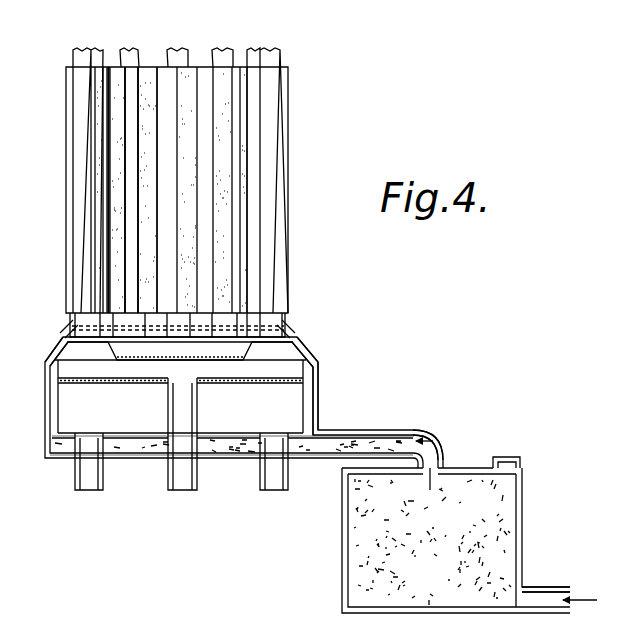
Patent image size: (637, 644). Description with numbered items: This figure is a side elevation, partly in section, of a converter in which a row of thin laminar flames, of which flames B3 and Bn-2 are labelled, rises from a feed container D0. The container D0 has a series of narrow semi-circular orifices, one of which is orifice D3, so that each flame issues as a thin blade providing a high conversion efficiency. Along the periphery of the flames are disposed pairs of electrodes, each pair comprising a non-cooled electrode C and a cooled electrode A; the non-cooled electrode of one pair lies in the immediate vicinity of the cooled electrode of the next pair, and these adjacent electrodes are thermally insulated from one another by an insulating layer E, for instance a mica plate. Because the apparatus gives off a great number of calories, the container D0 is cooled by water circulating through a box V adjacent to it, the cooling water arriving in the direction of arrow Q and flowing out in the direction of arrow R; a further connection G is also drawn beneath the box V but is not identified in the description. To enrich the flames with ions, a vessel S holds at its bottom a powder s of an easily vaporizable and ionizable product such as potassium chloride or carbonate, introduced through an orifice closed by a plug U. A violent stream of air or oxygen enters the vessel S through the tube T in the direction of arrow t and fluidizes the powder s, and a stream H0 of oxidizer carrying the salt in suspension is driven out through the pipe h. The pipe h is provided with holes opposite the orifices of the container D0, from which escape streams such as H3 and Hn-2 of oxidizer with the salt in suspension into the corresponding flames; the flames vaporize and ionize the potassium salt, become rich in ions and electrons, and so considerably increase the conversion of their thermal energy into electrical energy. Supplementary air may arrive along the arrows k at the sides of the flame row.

The thin flame B3 is at (84, 51).
The thin flame Bn-2 is at (270, 52).
The thermal insulating layer E is at (125, 138).
The non-cooled electrode C is at (150, 175).
The cooled electrode A is at (133, 202).
The supplementary air arrows k is at (68, 321).
The oxidizer stream H3 is at (58, 340).
The oxidizer stream Hn-2 is at (305, 338).
The orifice D3 is at (97, 345).
The feed container D0 is at (308, 368).
The cooling box V is at (222, 440).
The cooling water outlet arrow R is at (88, 478).
The inlet pipe G is at (182, 480).
The cooling water inlet arrow Q is at (275, 480).
The pipe h is at (413, 430).
The oxidizer stream with suspended powder H0 is at (433, 452).
The plug U is at (509, 459).
The vessel S is at (522, 490).
The powder s is at (492, 510).
The tube T is at (540, 587).
The air inlet arrow t is at (580, 593).